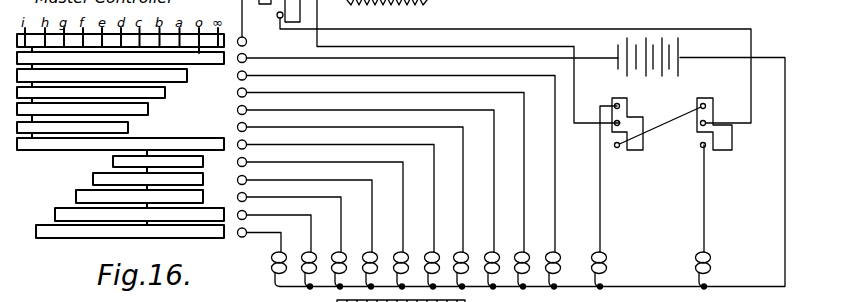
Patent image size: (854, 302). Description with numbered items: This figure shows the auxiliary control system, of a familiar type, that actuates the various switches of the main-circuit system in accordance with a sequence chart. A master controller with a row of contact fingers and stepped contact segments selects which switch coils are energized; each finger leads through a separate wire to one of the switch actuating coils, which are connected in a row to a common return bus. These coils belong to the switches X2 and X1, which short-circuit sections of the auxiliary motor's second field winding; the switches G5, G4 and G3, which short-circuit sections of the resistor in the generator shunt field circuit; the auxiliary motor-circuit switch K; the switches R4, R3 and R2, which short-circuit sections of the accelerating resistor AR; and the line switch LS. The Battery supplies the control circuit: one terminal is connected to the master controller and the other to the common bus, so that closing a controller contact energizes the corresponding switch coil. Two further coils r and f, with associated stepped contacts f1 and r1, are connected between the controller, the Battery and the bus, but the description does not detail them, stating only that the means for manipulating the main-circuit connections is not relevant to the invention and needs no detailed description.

The switch X2 is at (267, 260).
The switch X1 is at (282, 252).
The switch G5 is at (297, 243).
The switch G4 is at (312, 234).
The switch G3 is at (328, 225).
The auxiliary motor-circuit switch K is at (343, 217).
The switch R4 is at (358, 208).
The switch R3 is at (373, 199).
The switch R2 is at (388, 191).
The line switch LS is at (404, 183).
The accelerating resistor AR is at (387, 12).
The reverse relay and contact r is at (438, 144).
The forward relay and contact f is at (498, 144).
The battery Battery is at (678, 56).
The forward relay contact f1 is at (670, 115).
The reverse relay contact r1 is at (683, 94).